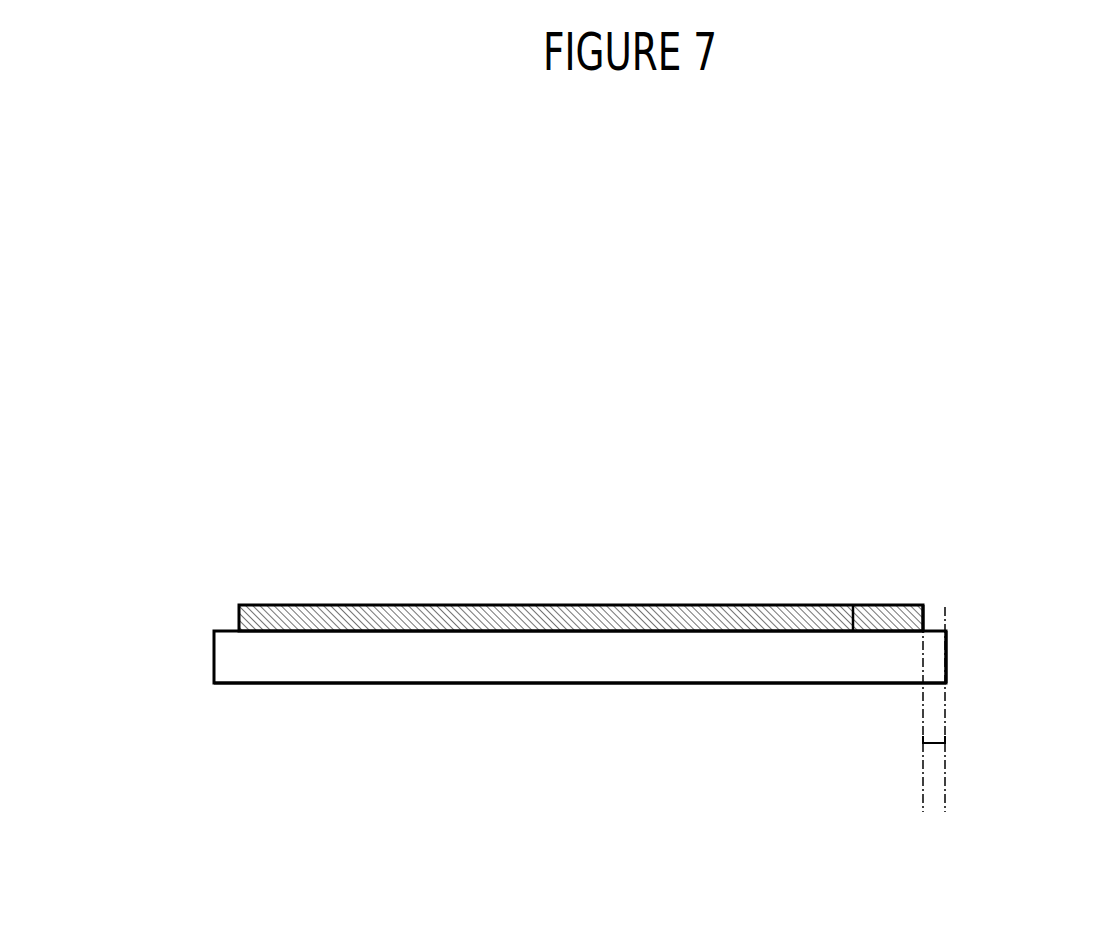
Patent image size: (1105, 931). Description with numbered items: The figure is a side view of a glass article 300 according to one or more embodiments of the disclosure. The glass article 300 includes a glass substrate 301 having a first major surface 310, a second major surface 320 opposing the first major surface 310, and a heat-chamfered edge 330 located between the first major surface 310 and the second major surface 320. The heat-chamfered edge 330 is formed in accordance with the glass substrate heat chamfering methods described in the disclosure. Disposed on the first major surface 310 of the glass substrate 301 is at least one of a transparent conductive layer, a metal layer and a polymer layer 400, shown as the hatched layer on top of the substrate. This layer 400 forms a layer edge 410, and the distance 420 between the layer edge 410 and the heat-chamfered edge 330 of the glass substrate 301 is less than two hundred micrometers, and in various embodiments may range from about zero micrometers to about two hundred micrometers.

The glass article 300 is at (383, 521).
The glass substrate 301 is at (606, 676).
The first major surface 310 is at (853, 631).
The second major surface 320 is at (660, 684).
The heat-chamfered edge 330 is at (947, 665).
The polymer layer 400 is at (466, 622).
The layer edge 410 is at (924, 618).
The distance 420 is at (935, 745).